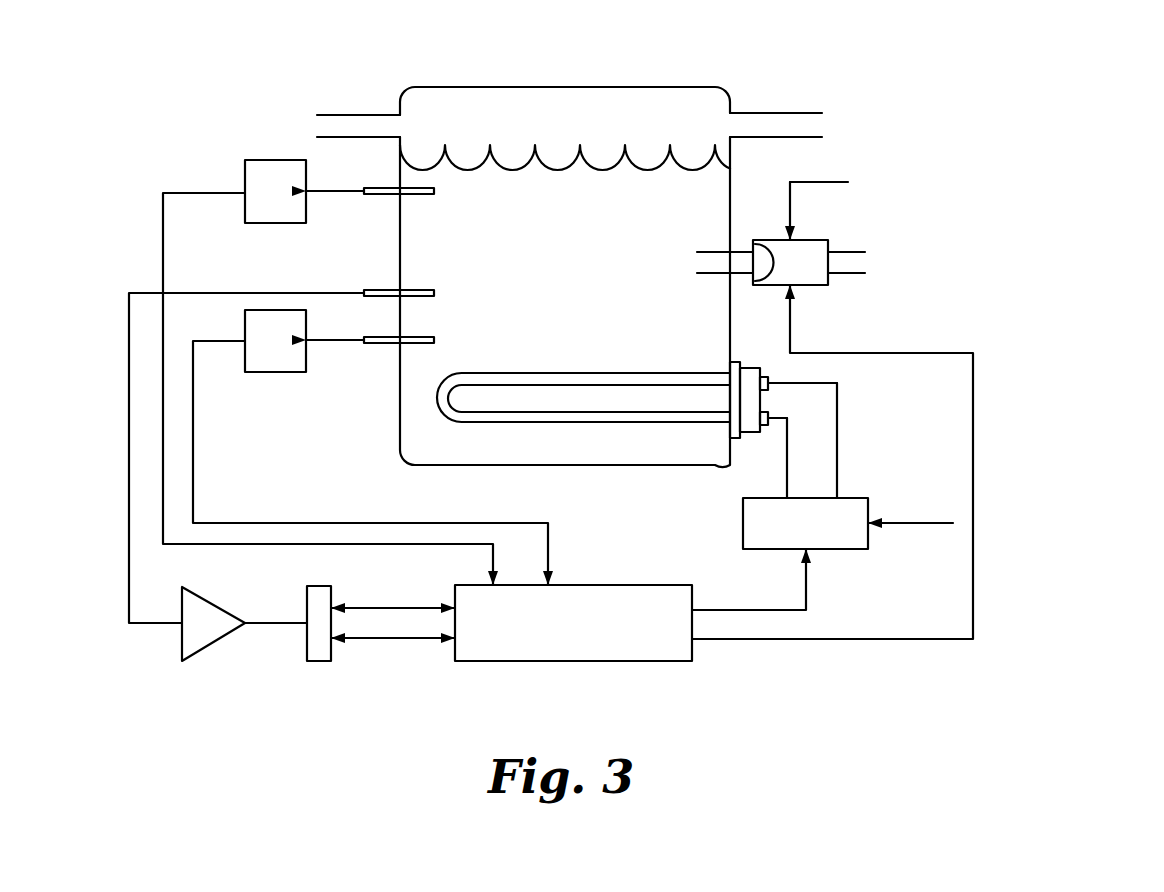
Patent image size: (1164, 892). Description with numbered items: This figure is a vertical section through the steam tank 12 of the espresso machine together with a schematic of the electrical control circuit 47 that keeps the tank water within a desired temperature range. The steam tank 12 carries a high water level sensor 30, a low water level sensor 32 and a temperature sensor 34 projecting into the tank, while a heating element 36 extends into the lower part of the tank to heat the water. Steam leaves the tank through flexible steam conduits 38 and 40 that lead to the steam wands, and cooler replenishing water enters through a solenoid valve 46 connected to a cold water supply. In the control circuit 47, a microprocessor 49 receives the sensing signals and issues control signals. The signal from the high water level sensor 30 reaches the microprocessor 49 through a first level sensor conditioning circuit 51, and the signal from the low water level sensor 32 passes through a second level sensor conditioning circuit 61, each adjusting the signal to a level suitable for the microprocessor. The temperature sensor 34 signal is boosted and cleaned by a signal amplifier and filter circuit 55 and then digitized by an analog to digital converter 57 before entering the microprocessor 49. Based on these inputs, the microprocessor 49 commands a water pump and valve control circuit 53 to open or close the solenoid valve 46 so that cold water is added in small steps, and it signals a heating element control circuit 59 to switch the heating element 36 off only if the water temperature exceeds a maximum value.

The steam tank 12 is at (583, 254).
The high water level sensor 30 is at (432, 194).
The low water level sensor 32 is at (436, 338).
The temperature sensor 34 is at (436, 292).
The heating element 36 is at (630, 420).
The flexible steam conduit 38 is at (345, 115).
The flexible steam conduit 40 is at (774, 112).
The solenoid valve 46 is at (766, 243).
The control circuit 47 is at (988, 628).
The microprocessor 49 is at (580, 636).
The first level sensor conditioning circuit 51 is at (258, 181).
The water pump and valve control circuit 53 is at (808, 276).
The signal amplifier and filter circuit 55 is at (200, 633).
The analog to digital converter 57 is at (319, 596).
The heating element control circuit 59 is at (848, 530).
The second level sensor conditioning circuit 61 is at (268, 357).